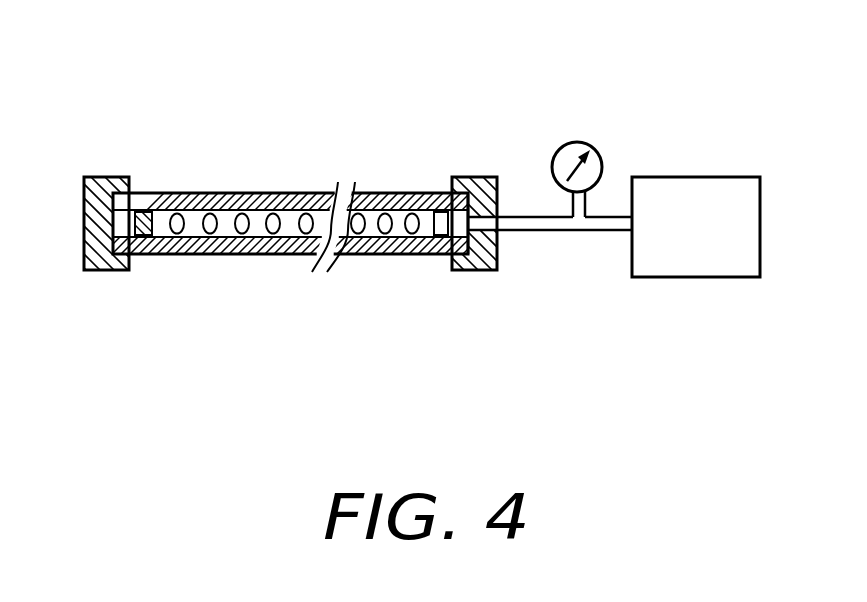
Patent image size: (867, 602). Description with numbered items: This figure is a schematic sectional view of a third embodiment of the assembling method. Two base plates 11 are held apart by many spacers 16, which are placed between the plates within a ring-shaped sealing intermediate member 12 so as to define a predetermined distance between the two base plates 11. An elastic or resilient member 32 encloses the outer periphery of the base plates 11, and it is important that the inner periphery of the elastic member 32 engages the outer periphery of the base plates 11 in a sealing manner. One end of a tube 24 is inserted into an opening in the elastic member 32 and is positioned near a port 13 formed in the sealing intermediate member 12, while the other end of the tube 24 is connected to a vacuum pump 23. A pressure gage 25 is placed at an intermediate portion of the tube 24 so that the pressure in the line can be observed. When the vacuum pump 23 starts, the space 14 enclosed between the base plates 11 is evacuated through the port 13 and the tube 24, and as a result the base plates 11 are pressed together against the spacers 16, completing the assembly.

The base plates 11 is at (240, 192).
The sealing intermediate member 12 is at (150, 193).
The port 13 is at (436, 222).
The space 14 is at (255, 257).
The spacers 16 is at (382, 257).
The vacuum pump 23 is at (698, 177).
The tube 24 is at (532, 232).
The pressure gage 25 is at (572, 142).
The elastic member 32 is at (105, 273).